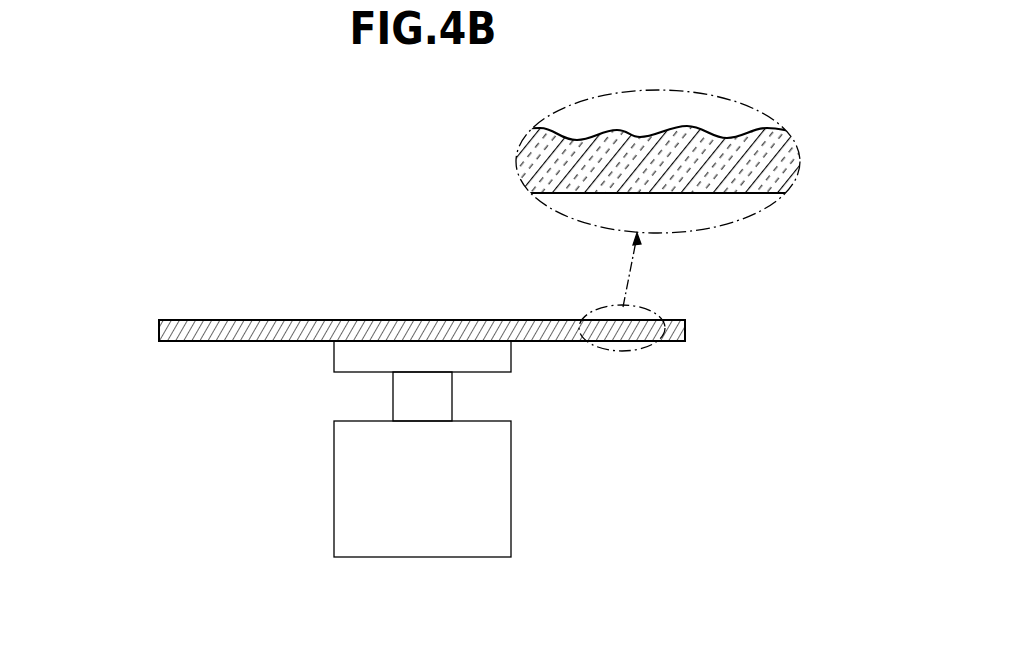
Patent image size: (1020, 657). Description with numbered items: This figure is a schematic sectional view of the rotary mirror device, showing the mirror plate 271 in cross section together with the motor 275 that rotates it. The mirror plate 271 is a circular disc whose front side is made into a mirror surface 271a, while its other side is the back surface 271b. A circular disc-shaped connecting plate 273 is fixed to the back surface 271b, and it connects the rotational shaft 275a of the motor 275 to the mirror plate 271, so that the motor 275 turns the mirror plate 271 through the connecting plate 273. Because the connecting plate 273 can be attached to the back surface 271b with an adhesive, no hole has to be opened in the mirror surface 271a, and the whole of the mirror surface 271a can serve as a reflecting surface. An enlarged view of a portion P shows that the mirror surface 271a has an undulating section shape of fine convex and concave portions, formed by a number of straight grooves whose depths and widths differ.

The mirror plate 271 is at (686, 330).
The mirror surface 271a is at (207, 320).
The back surface 271b is at (200, 341).
The connecting plate 273 is at (502, 353).
The motor 275 is at (511, 535).
The rotational shaft 275a is at (452, 392).
The portion P is at (600, 308).